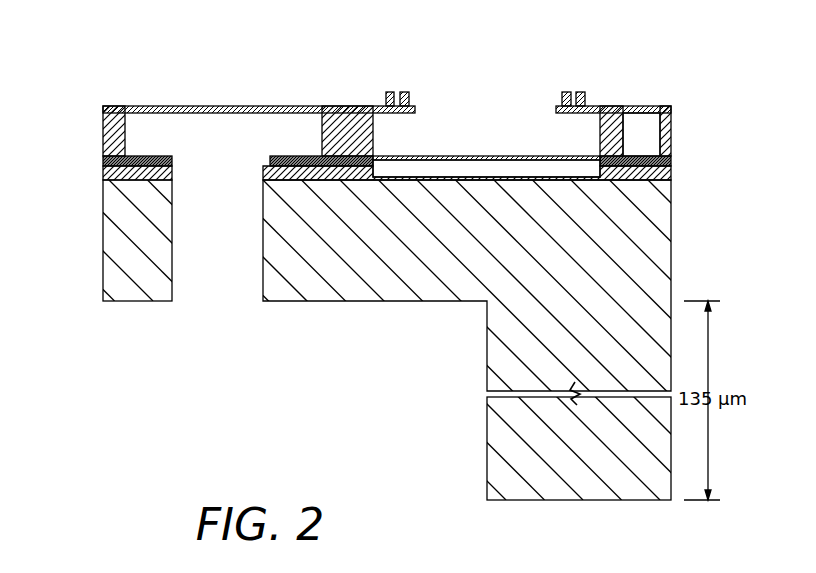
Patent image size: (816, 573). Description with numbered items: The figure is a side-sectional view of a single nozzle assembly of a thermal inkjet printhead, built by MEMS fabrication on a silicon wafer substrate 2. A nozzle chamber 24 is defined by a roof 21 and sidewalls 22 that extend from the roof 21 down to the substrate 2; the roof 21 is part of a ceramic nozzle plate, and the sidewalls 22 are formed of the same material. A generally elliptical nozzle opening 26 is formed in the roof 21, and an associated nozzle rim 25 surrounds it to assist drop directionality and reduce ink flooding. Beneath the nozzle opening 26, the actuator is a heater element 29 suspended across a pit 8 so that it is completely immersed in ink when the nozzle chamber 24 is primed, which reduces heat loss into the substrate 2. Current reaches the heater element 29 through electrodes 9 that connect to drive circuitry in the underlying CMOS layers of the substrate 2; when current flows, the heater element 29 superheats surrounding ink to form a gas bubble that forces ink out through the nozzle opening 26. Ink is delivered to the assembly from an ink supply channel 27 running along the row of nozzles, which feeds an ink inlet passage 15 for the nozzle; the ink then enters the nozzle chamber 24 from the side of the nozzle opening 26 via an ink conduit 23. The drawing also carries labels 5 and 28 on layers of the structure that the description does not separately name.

The silicon wafer substrate 2 is at (663, 245).
The passivation layer 5 is at (672, 176).
The pit 8 is at (556, 164).
The electrodes 9 is at (320, 155).
The ink inlet passage 15 is at (220, 288).
The roof 21 is at (377, 106).
The sidewalls 22 is at (107, 128).
The ink conduit 23 is at (225, 133).
The nozzle chamber 24 is at (486, 150).
The nozzle rim 25 is at (582, 92).
The nozzle opening 26 is at (511, 86).
The ink supply channel 27 is at (304, 377).
The contact pocket 28 is at (636, 150).
The heater element 29 is at (418, 156).